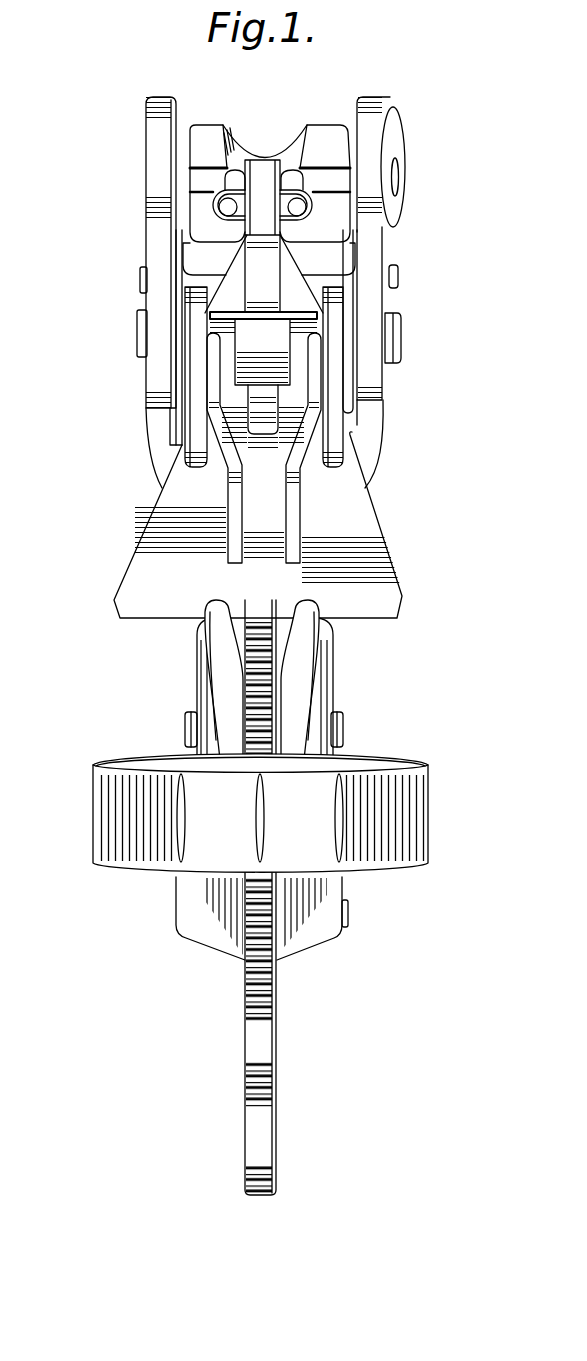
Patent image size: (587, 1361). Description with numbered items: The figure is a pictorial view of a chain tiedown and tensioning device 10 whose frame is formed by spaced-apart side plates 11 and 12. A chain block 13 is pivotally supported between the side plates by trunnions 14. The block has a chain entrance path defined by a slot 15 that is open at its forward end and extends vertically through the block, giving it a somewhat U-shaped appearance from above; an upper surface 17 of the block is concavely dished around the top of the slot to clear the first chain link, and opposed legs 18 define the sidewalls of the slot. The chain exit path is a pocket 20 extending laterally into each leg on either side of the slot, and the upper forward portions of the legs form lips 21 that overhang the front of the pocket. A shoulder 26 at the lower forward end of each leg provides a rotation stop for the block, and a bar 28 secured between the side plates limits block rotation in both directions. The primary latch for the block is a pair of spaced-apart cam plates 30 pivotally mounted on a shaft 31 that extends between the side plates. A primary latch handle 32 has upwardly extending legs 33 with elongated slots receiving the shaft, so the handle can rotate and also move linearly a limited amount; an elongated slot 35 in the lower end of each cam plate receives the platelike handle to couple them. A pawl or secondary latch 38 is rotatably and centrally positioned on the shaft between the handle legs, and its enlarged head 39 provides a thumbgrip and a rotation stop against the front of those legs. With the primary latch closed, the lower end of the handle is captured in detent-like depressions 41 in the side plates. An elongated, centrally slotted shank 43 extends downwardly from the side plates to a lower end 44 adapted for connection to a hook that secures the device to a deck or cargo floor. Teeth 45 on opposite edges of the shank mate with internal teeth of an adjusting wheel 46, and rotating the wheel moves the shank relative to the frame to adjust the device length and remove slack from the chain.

The chain tiedown and tensioning device 10 is at (124, 259).
The side plate 11 is at (155, 437).
The side plate 12 is at (384, 245).
The chain block 13 is at (207, 112).
The trunnions 14 is at (405, 166).
The slot 15 is at (267, 165).
The upper surface 17 is at (232, 135).
The legs 18 is at (202, 143).
The pocket 20 is at (220, 208).
The lips 21 is at (203, 178).
The shoulder 26 is at (186, 274).
The bar 28 is at (398, 277).
The cam plates 30 is at (197, 314).
The shaft 31 is at (401, 341).
The primary latch handle 32 is at (375, 583).
The legs 33 is at (208, 373).
The elongated slot 35 is at (353, 430).
The pawl or secondary latch 38 is at (240, 279).
The enlarged head 39 is at (276, 343).
The detent-like depressions 41 is at (289, 598).
The shank 43 is at (243, 642).
The lower end 44 is at (255, 1157).
The teeth 45 is at (255, 712).
The adjusting wheel 46 is at (94, 828).